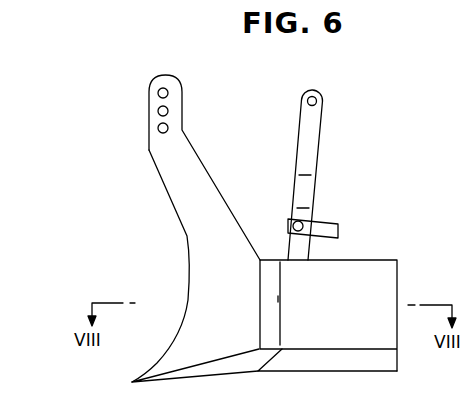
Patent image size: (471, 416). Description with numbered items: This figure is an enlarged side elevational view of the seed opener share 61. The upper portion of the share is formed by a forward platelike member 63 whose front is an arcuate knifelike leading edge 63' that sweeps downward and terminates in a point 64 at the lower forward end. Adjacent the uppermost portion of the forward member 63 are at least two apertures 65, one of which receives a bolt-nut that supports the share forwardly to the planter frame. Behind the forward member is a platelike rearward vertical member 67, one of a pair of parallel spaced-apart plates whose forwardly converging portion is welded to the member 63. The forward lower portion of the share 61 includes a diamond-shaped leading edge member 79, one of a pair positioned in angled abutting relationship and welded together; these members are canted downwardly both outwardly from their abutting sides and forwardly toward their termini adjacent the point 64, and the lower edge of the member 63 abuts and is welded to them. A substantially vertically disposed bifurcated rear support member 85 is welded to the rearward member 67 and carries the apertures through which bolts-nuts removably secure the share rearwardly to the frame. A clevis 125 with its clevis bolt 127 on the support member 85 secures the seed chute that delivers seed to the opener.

The seed opener share 61 is at (378, 149).
The forward platelike member 63 is at (168, 266).
The arcuate knifelike leading edge 63' is at (187, 167).
The point 64 is at (133, 382).
The apertures 65 is at (168, 126).
The platelike rearward vertical member 67 is at (370, 278).
The diamond-shaped leading edge member 79 is at (232, 367).
The bifurcated rear support member 85 is at (305, 160).
The clevis 125 is at (323, 231).
The clevis bolt 127 is at (294, 222).